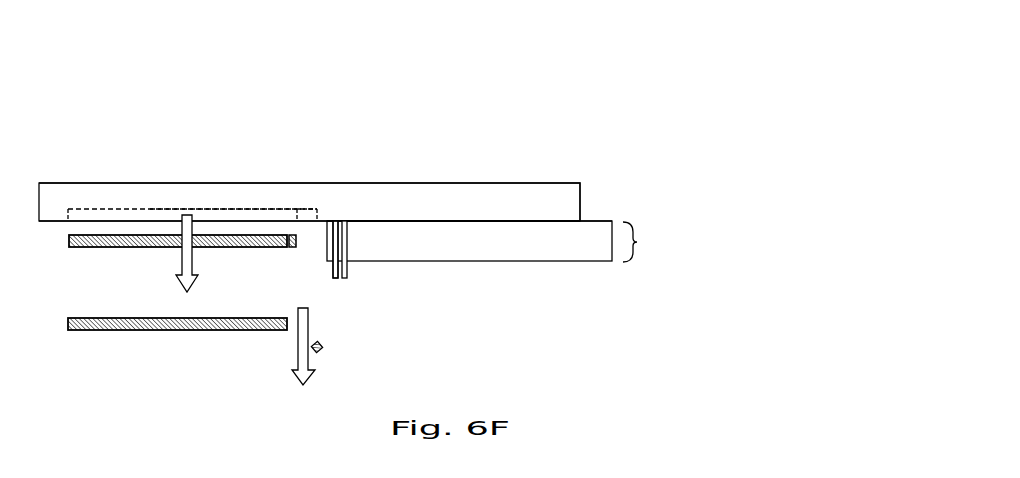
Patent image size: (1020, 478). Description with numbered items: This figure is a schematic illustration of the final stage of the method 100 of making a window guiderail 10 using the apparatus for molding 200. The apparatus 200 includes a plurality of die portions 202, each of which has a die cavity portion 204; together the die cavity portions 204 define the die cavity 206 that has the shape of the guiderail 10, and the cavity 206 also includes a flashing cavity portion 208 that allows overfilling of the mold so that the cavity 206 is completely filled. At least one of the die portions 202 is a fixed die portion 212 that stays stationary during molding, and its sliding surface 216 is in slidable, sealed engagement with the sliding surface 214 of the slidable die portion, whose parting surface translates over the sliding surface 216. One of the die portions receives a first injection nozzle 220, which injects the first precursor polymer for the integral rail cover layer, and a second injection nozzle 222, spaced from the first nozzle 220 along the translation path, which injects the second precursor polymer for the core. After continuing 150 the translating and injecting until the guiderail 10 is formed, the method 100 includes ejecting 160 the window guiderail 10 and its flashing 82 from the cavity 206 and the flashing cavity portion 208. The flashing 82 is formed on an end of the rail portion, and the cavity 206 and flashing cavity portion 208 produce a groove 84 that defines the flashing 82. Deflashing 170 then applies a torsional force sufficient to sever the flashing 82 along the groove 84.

The window guiderail 10 is at (138, 248).
The flashing 82 is at (317, 354).
The groove 84 is at (285, 240).
The method 100 is at (572, 124).
The continuing 150 is at (726, 310).
The ejecting 160 is at (188, 214).
The deflashing 170 is at (309, 311).
The apparatus for molding 200 is at (572, 174).
The die portions 202 is at (460, 183).
The die cavity portions 204 is at (122, 214).
The die cavity 206 is at (248, 213).
The flashing cavity portion 208 is at (307, 213).
The fixed die portion 212 is at (637, 242).
The sliding surface 214 is at (377, 220).
The sliding surface 216 is at (538, 213).
The first injection nozzle 220 is at (333, 266).
The second injection nozzle 222 is at (347, 270).